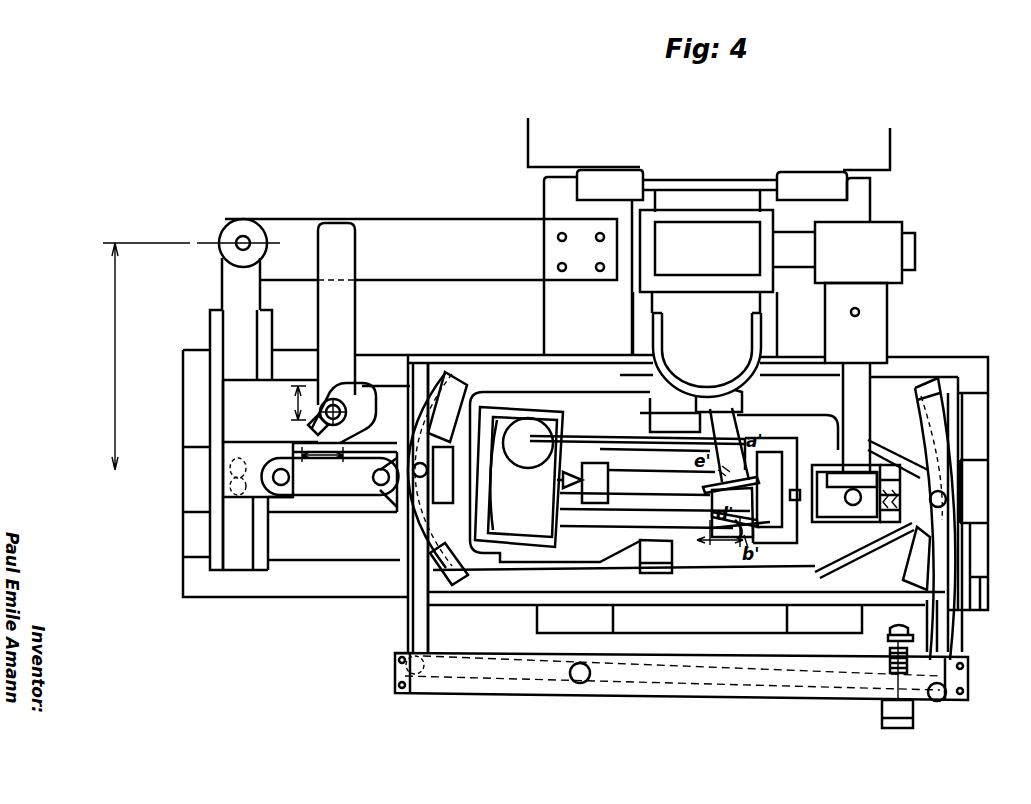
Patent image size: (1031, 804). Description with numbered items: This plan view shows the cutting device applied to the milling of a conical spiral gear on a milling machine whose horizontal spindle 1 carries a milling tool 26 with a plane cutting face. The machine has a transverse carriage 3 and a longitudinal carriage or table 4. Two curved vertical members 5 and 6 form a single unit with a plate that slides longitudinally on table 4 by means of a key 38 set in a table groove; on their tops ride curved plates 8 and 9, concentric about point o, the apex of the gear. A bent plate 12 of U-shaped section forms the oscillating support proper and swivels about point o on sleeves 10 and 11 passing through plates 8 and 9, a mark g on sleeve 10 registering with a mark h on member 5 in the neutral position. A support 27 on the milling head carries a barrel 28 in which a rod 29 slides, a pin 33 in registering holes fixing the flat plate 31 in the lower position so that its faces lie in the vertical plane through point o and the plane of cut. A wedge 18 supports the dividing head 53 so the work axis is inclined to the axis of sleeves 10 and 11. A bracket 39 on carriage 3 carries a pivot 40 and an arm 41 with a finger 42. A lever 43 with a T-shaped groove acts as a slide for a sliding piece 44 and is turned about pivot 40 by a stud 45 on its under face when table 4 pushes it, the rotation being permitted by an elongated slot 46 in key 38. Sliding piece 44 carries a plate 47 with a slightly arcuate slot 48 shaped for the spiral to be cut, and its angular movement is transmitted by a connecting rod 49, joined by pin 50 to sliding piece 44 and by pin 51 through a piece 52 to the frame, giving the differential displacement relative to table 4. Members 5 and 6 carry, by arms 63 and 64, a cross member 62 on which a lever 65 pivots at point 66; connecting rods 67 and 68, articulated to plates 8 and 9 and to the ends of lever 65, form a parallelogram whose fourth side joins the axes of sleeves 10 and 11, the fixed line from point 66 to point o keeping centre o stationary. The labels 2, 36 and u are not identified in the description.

The horizontal spindle 1 is at (723, 425).
The cup holder 2 is at (738, 325).
The transverse carriage 3 is at (557, 297).
The longitudinal carriage 4 is at (973, 380).
The curved vertical member 5 is at (918, 386).
The curved vertical member 6 is at (460, 576).
The curved plate 8 is at (942, 452).
The curved plate 9 is at (440, 352).
The sleeve 10 is at (436, 475).
The sleeve 11 is at (926, 498).
The bent plate 12 is at (878, 458).
The wedge 18 is at (378, 390).
The milling tool 26 is at (716, 492).
The support 27 is at (700, 238).
The barrel 28 is at (880, 345).
The rod 29 is at (853, 418).
The flat plate 31 is at (840, 480).
The pin 33 is at (860, 312).
The side block 36 is at (975, 497).
The key 38 is at (190, 487).
The bracket 39 is at (417, 240).
The pivot 40 is at (245, 240).
The arm 41 is at (333, 238).
The finger 42 is at (333, 399).
The lever 43 is at (213, 323).
The sliding piece 44 is at (230, 448).
The stud 45 is at (237, 476).
The elongated slot 46 is at (218, 502).
The plate 47 is at (237, 400).
The arcuate slot 48 is at (308, 426).
The connecting rod 49 is at (340, 478).
The pin 50 is at (281, 486).
The pin 51 is at (381, 486).
The piece 52 is at (397, 456).
The dividing head 53 is at (545, 525).
The cross member 62 is at (433, 690).
The arm 63 is at (410, 625).
The arm 64 is at (962, 628).
The lever 65 is at (680, 684).
The pivot point 66 is at (578, 684).
The connecting rod 67 is at (418, 627).
The connecting rod 68 is at (930, 628).
The height dimension u is at (104, 356).
The mark h is at (293, 403).
The center point o is at (582, 483).
The mark g is at (711, 534).